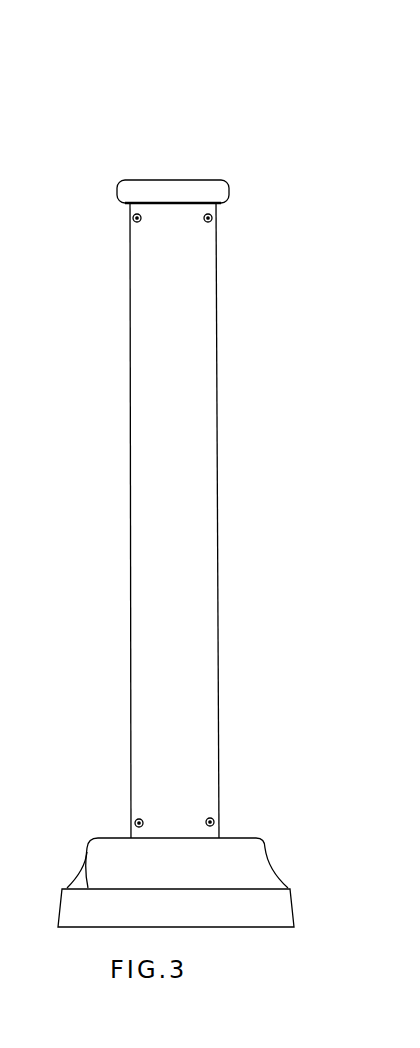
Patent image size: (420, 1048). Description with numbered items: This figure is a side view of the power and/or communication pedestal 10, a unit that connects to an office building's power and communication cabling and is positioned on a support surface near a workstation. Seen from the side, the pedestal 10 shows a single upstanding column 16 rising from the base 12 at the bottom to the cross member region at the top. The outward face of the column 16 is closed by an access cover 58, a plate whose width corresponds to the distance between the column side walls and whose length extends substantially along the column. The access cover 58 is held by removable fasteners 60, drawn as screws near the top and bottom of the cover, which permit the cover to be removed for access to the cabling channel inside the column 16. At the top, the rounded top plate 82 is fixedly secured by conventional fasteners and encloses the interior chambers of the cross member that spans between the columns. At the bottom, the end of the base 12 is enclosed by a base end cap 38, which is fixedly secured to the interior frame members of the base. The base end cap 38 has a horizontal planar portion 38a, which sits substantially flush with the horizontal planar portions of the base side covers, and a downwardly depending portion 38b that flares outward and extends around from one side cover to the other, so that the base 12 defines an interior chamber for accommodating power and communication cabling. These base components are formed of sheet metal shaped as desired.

The power and/or communication pedestal 10 is at (154, 96).
The base 12 is at (240, 902).
The column 16 is at (201, 520).
The base end cap 38 is at (148, 902).
The horizontal planar portion 38a is at (97, 836).
The downwardly depending portion 38b is at (278, 962).
The access cover 58 is at (199, 274).
The removable fasteners 60 is at (133, 218).
The top plate 82 is at (174, 188).